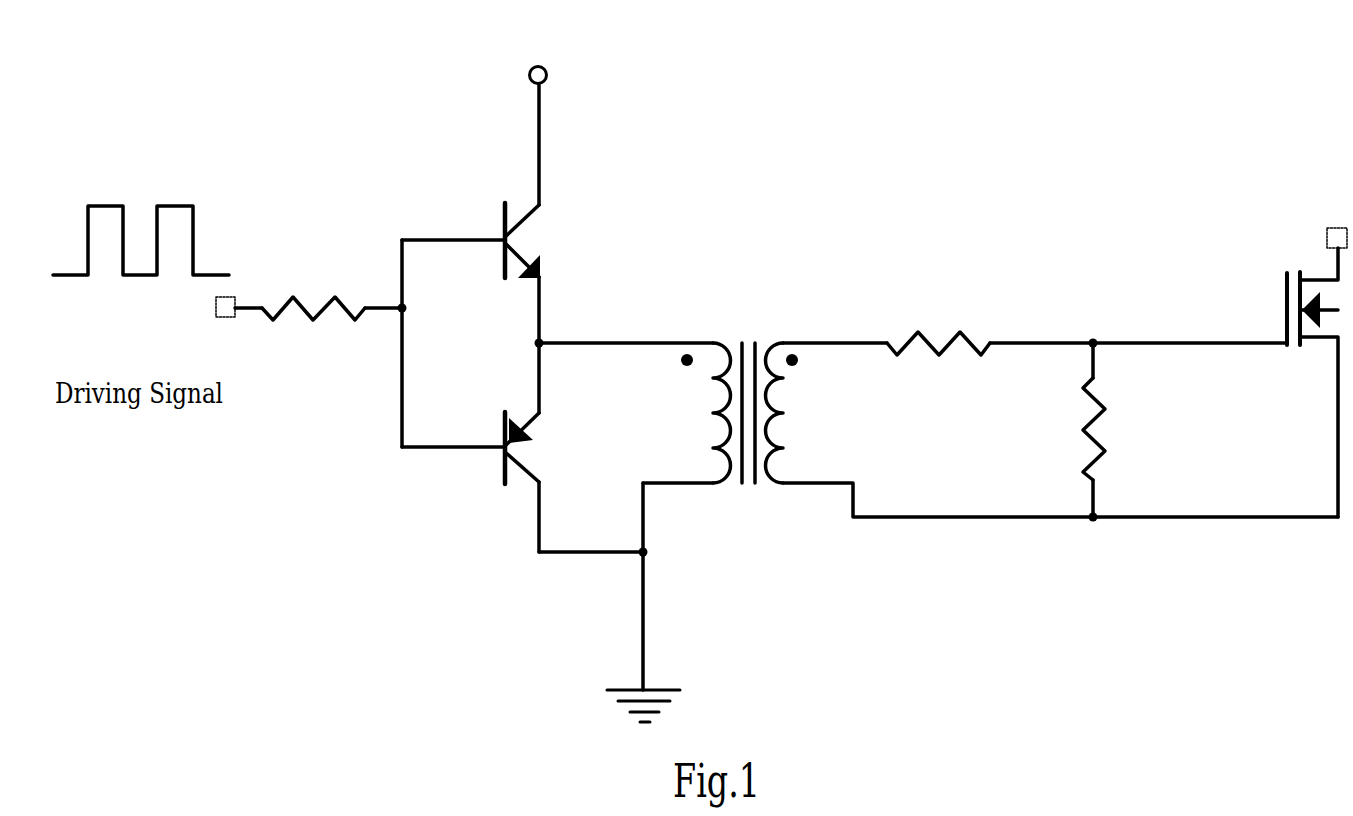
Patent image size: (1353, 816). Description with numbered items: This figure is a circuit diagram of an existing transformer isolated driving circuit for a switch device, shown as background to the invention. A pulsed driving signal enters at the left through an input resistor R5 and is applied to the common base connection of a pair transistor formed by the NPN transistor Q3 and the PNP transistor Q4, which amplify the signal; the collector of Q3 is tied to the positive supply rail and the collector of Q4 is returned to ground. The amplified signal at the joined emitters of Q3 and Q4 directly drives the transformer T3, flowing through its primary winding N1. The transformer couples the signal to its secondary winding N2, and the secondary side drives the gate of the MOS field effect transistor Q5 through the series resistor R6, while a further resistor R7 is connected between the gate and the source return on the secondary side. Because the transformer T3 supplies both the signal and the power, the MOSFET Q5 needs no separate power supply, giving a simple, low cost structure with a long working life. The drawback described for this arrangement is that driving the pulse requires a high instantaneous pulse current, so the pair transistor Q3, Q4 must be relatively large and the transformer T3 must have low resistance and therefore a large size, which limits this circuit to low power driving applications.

The input resistor R5 is at (313, 275).
The NPN transistor Q3 is at (499, 188).
The PNP transistor Q4 is at (535, 447).
The transformer T3 is at (750, 379).
The primary winding N1 is at (688, 413).
The secondary winding N2 is at (806, 413).
The gate resistor R6 is at (938, 310).
The gate-source resistor R7 is at (1127, 430).
The MOSFET Q5 is at (1291, 372).